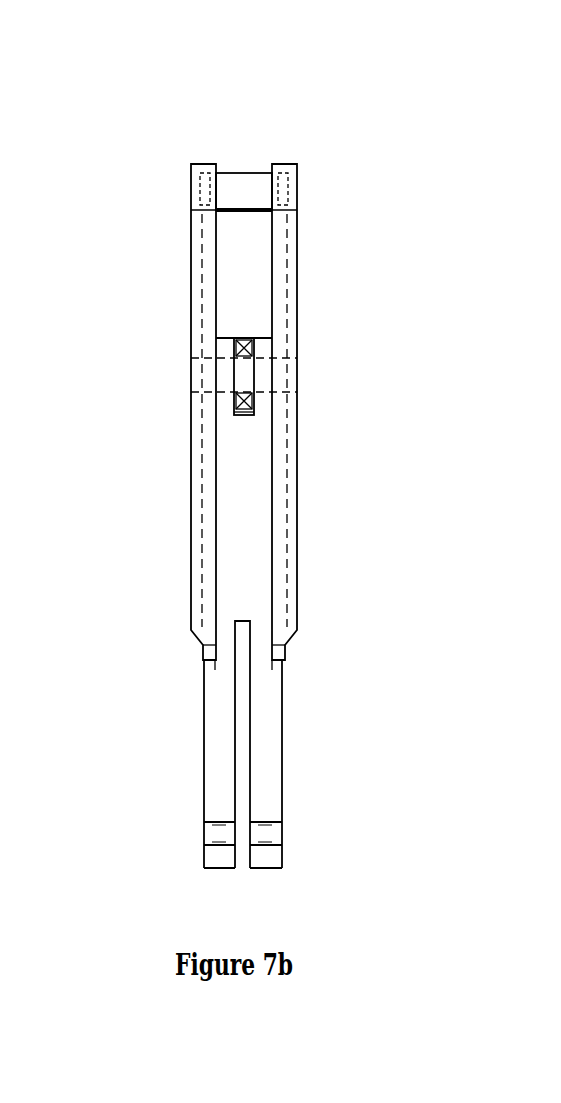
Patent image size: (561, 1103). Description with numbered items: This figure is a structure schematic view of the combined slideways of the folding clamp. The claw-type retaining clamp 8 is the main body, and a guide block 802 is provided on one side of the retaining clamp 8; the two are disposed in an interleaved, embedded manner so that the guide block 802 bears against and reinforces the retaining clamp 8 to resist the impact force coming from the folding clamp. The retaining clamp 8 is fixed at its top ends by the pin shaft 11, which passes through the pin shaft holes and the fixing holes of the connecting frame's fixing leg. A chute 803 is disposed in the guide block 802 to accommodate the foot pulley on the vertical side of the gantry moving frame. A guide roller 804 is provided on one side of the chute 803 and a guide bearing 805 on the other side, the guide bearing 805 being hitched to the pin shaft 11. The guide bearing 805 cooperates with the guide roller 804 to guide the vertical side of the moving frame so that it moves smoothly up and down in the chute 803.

The retaining clamp 8 is at (329, 734).
The pin shaft 11 is at (345, 479).
The guide block 802 is at (154, 412).
The chute 803 is at (177, 195).
The guide roller 804 is at (331, 105).
The guide bearing 805 is at (332, 283).